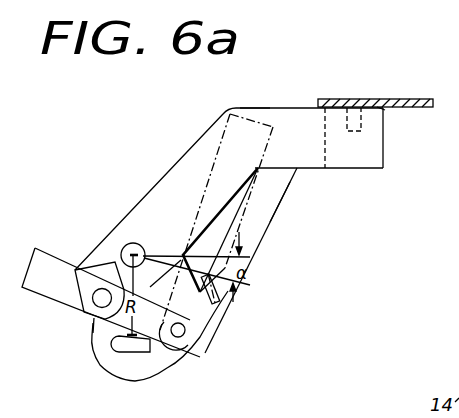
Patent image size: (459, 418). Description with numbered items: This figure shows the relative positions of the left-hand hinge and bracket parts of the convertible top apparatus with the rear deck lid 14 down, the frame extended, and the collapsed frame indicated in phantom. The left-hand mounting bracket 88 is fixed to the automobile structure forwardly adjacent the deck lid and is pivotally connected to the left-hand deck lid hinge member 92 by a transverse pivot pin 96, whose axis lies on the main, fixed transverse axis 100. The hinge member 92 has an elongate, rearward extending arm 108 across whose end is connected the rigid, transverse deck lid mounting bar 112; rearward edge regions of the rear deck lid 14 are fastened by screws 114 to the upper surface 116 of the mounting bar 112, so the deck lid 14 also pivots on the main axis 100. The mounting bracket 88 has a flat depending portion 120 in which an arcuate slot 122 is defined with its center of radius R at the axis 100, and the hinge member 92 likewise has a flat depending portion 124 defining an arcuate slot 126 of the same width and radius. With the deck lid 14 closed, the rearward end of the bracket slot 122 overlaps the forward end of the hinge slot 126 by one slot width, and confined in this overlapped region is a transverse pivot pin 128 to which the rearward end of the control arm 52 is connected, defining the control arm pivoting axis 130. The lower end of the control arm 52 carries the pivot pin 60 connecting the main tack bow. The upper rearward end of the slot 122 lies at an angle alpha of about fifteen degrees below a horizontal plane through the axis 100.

The rear deck lid 14 is at (416, 99).
The control arm 52 is at (224, 133).
The pivot pin 60 is at (84, 312).
The left-hand mounting bracket 88 is at (276, 213).
The left-hand deck lid hinge member 92 is at (272, 84).
The left-hand transverse pivot pin 96 is at (133, 243).
The transverse axis 100 is at (122, 252).
The rearward extending arm 108 is at (316, 163).
The deck lid mounting bar 112 is at (385, 145).
The screws 114 is at (352, 99).
The upper surface 116 is at (385, 110).
The flat depending portion 120 is at (265, 233).
The arcuate slot 122 is at (218, 307).
The flat depending portion 124 is at (95, 333).
The arcuate slot 126 is at (132, 353).
The transverse pivot pin 128 is at (177, 340).
The control arm pivoting axis 130 is at (200, 346).